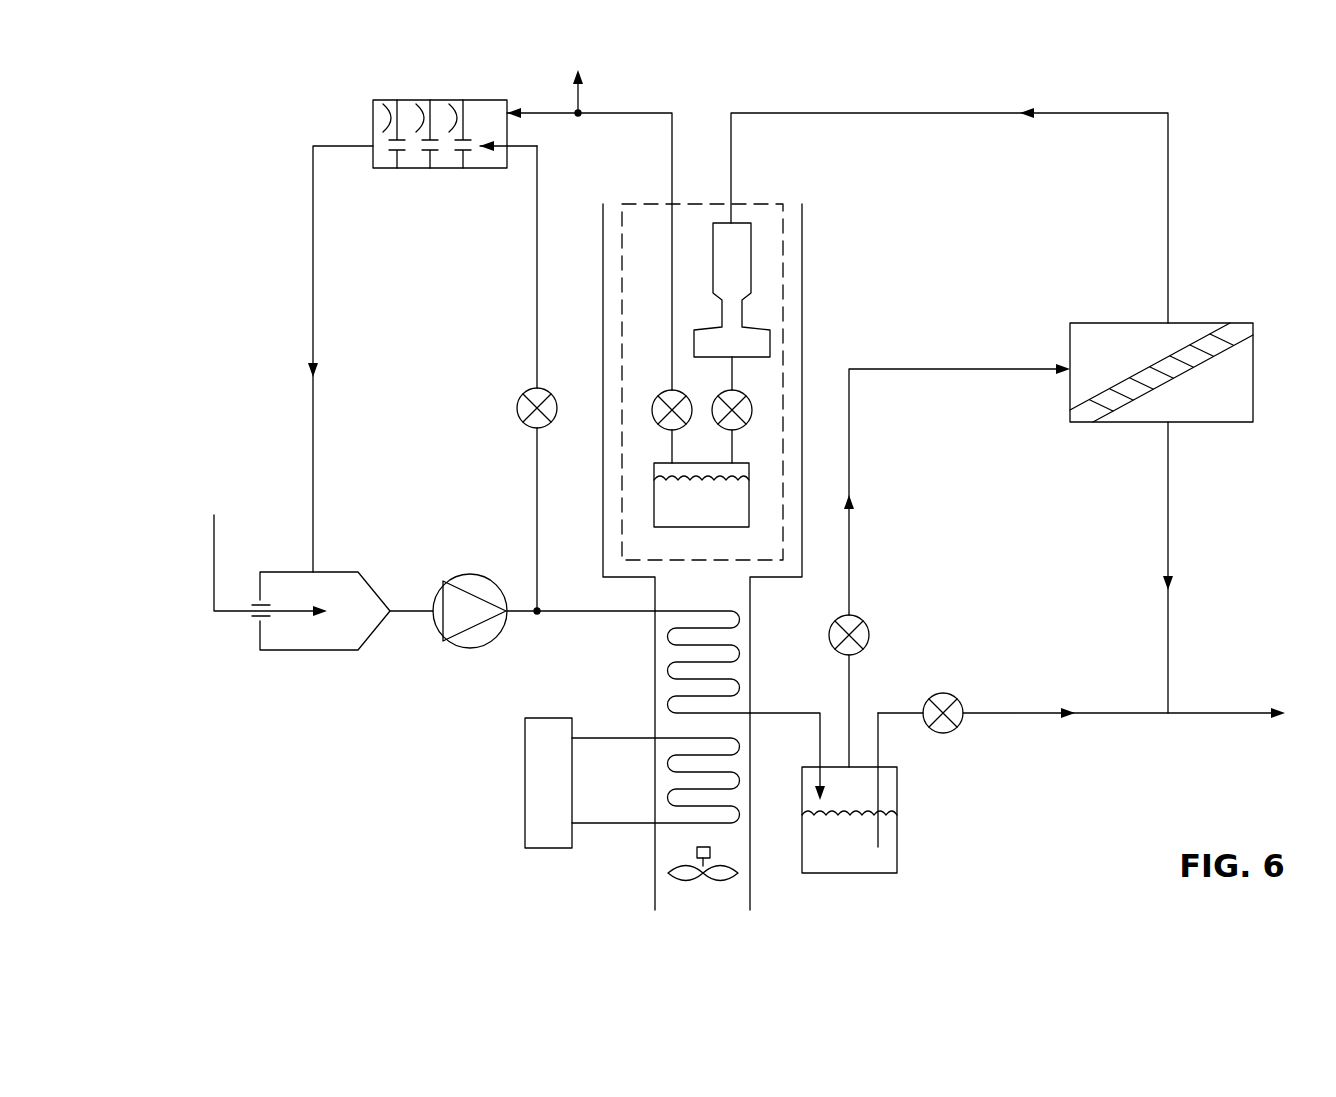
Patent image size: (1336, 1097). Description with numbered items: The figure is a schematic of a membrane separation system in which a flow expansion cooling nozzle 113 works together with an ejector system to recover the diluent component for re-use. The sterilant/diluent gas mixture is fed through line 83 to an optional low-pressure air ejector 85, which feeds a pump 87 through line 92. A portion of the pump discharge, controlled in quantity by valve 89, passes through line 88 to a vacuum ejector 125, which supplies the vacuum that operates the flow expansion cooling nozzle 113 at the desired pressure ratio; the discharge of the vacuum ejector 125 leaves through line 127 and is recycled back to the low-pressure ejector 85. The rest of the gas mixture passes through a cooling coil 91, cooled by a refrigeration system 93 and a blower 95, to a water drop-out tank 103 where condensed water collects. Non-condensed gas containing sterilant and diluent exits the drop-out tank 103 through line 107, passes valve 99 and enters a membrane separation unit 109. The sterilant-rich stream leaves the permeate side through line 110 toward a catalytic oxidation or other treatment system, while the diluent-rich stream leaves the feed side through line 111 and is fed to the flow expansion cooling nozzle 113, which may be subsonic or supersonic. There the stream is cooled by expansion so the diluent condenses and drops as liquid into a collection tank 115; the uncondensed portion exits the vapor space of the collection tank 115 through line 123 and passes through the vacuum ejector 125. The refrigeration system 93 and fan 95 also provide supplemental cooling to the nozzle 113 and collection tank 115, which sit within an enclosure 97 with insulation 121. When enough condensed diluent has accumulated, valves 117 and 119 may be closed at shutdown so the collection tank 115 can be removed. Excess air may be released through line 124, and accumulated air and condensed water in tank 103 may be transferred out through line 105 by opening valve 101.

The line 83 is at (214, 542).
The low-pressure air ejector 85 is at (327, 650).
The pump 87 is at (463, 571).
The line 88 is at (537, 467).
The valve 89 is at (517, 407).
The cooling coil 91 is at (663, 637).
The line 92 is at (602, 612).
The refrigeration system 93 is at (525, 753).
The blower 95 is at (677, 880).
The enclosure 97 is at (803, 285).
The valve 99 is at (870, 630).
The valve 101 is at (942, 690).
The water drop-out tank 103 is at (897, 837).
The line 105 is at (980, 710).
The line 107 is at (851, 410).
The membrane separation unit 109 is at (1200, 323).
The line 110 is at (1168, 528).
The line 111 is at (922, 118).
The flow expansion cooling nozzle 113 is at (713, 282).
The collection tank 115 is at (654, 490).
The valve 117 is at (753, 403).
The valve 119 is at (662, 390).
The insulation 121 is at (647, 204).
The line 123 is at (662, 112).
The line 124 is at (578, 100).
The vacuum ejector 125 is at (408, 168).
The line 127 is at (313, 263).